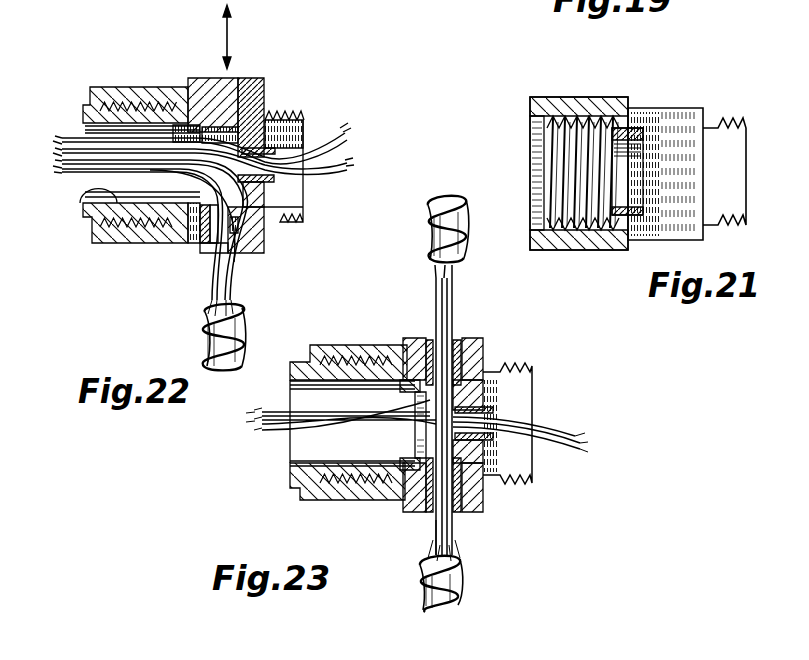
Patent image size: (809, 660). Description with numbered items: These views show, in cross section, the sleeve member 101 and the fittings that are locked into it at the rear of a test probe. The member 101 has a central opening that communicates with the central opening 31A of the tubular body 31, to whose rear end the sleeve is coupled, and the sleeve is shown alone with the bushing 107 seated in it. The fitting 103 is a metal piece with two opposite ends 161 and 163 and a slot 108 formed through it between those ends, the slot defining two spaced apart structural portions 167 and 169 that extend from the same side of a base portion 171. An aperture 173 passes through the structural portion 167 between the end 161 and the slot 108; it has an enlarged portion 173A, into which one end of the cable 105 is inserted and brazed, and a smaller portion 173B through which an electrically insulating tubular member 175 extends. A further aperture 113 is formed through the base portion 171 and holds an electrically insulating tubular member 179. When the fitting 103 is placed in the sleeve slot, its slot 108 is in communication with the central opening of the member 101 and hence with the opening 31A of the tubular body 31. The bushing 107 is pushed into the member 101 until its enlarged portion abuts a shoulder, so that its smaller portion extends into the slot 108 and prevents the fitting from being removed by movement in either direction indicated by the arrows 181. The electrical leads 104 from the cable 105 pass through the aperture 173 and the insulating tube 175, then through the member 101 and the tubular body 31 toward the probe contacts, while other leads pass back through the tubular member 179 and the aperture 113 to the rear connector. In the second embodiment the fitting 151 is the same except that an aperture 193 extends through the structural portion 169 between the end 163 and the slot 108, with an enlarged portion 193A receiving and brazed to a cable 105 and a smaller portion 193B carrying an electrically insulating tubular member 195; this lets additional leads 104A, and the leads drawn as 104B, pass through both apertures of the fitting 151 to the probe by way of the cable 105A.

In FIG. 22, the tubular body 31 is at (108, 104).
In FIG. 22, the central opening of the tubular body 31A is at (92, 203).
In FIG. 22, the member 101 is at (150, 92).
In FIG. 21, the member 101 is at (565, 104).
In FIG. 23, the member 101 is at (344, 500).
In FIG. 22, the fitting 103 is at (274, 112).
In FIG. 22, the electrical leads 104 is at (90, 167).
In FIG. 23, the leads 104A is at (452, 300).
In FIG. 23, the cable conductors 104B is at (460, 522).
In FIG. 22, the cable 105 is at (200, 352).
In FIG. 23, the cable 105A is at (470, 240).
In FIG. 21, the bushing 107 is at (628, 132).
In FIG. 22, the slot 108 is at (236, 127).
In FIG. 22, the aperture 113 is at (294, 122).
In FIG. 23, the fitting 151 is at (490, 378).
In FIG. 22, the end 161 is at (250, 258).
In FIG. 22, the end 163 is at (215, 84).
In FIG. 23, the end 163 is at (410, 345).
In FIG. 22, the structural portion 167 is at (192, 240).
In FIG. 22, the structural portion 169 is at (200, 100).
In FIG. 23, the structural portion 169 is at (483, 342).
In FIG. 22, the base portion 171 is at (264, 184).
In FIG. 22, the aperture 173 is at (200, 245).
In FIG. 22, the enlarged portion 173A is at (238, 240).
In FIG. 22, the smaller portion 173B is at (264, 200).
In FIG. 22, the electrically insulating tubular member 175 is at (207, 250).
In FIG. 22, the electrically insulating tubular member 179 is at (318, 132).
In FIG. 22, the arrows 181 is at (233, 36).
In FIG. 23, the aperture 193 is at (429, 346).
In FIG. 23, the enlarged portion 193A is at (462, 345).
In FIG. 23, the smaller portion 193B is at (470, 412).
In FIG. 23, the electrically insulating tubular member 195 is at (414, 382).